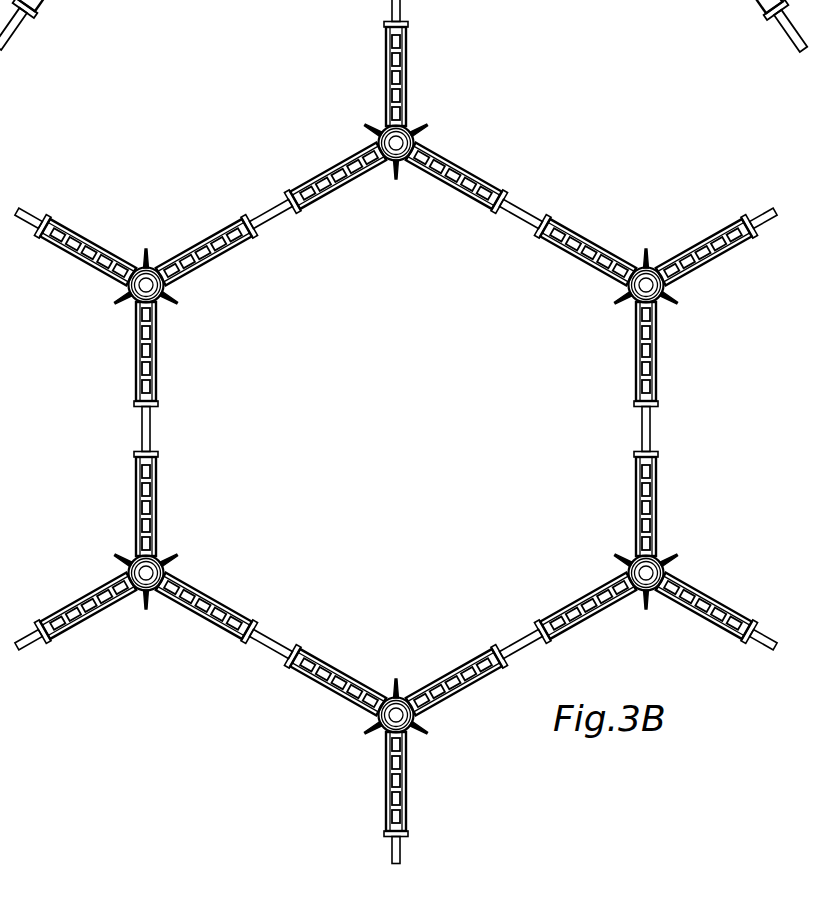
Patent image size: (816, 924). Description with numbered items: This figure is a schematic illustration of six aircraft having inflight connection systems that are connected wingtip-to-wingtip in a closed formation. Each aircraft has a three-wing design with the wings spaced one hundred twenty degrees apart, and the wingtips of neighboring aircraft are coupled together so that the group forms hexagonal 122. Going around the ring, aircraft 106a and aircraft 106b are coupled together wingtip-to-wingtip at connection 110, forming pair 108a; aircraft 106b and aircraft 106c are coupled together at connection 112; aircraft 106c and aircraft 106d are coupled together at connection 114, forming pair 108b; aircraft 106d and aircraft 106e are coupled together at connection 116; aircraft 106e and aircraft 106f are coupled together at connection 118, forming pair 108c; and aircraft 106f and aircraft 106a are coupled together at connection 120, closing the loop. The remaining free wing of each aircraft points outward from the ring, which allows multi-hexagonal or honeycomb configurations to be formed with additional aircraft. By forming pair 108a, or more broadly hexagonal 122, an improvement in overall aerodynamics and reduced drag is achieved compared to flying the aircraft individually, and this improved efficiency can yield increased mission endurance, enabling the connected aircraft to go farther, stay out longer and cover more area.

The aircraft 106a is at (199, 245).
The aircraft 106b is at (325, 171).
The aircraft 106c is at (590, 241).
The aircraft 106d is at (657, 511).
The aircraft 106e is at (469, 693).
The aircraft 106f is at (137, 508).
The pair 108a is at (386, 48).
The pair 108b is at (728, 263).
The pair 108c is at (73, 643).
The connection 110 is at (272, 221).
The connection 112 is at (514, 224).
The connection 114 is at (645, 431).
The connection 116 is at (517, 646).
The connection 118 is at (271, 644).
The connection 120 is at (148, 430).
The hexagonal 122 is at (396, 432).